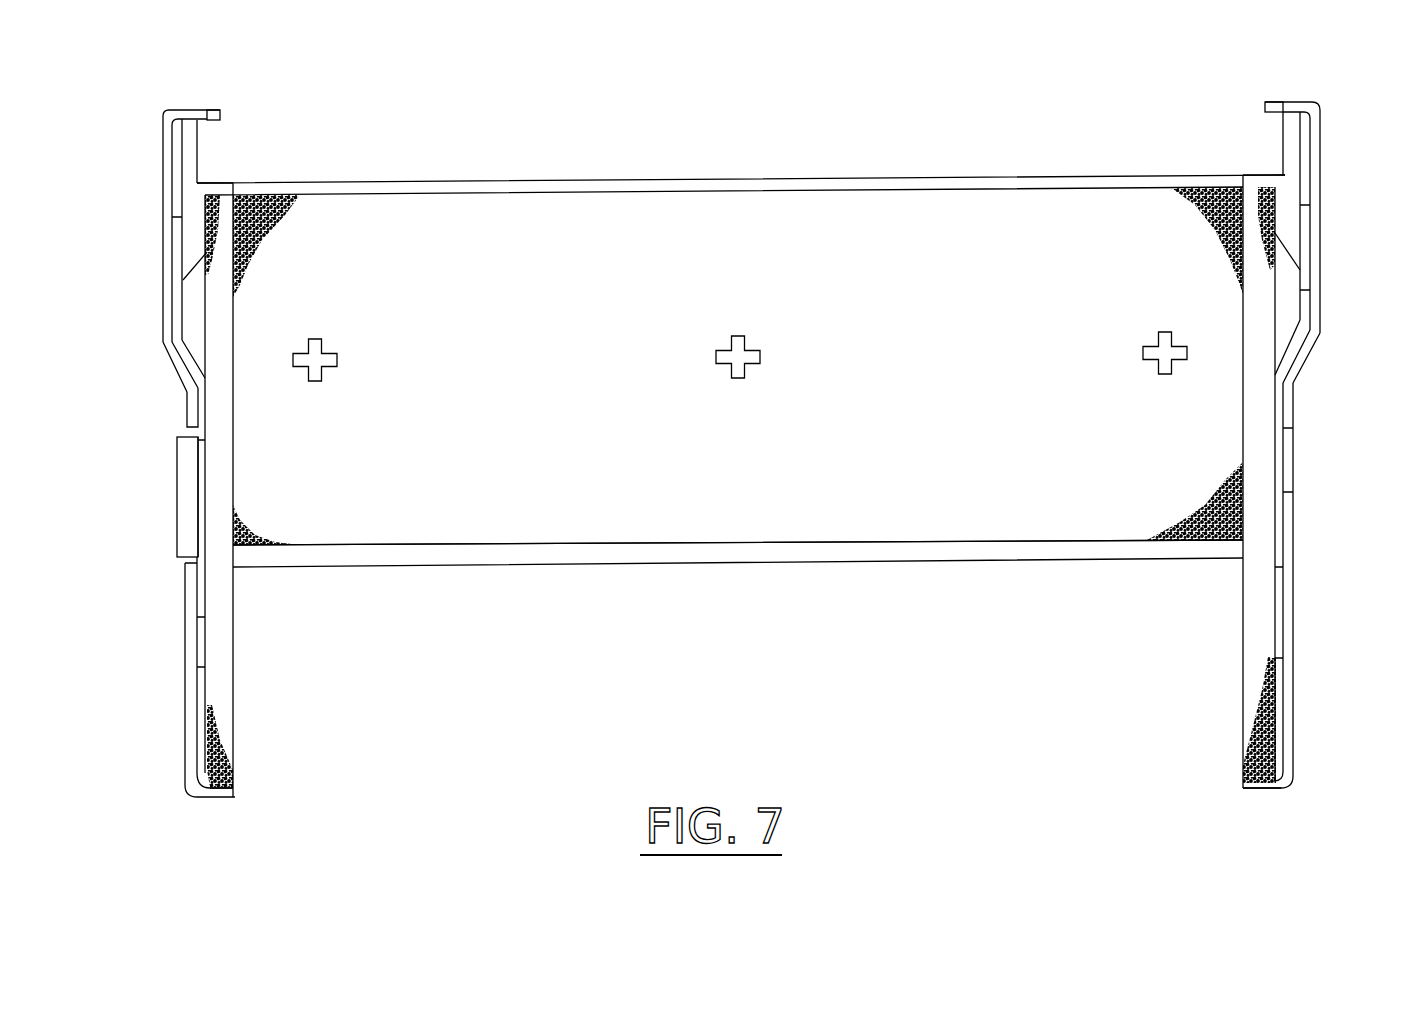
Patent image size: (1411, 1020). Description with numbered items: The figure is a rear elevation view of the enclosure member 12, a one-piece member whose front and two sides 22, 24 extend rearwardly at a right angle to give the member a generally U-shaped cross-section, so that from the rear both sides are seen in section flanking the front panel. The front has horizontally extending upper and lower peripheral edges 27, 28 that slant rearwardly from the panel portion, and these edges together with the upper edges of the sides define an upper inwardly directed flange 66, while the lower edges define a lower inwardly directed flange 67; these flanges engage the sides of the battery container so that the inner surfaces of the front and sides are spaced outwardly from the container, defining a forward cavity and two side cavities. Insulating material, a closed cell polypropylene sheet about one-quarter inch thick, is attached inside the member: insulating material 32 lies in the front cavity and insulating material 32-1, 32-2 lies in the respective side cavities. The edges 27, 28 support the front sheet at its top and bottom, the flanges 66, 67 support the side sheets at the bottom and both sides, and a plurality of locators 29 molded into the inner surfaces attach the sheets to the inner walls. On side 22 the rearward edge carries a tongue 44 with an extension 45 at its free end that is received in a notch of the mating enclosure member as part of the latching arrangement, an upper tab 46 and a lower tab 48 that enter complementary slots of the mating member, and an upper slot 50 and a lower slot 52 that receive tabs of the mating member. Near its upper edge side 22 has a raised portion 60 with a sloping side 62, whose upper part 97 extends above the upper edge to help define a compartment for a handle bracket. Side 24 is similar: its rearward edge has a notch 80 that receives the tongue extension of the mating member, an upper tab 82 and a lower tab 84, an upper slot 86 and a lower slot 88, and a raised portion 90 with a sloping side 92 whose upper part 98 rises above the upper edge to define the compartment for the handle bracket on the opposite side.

The enclosure member 12 is at (765, 715).
The side 22 is at (162, 287).
The side 24 is at (1320, 303).
The upper peripheral edge 27 is at (867, 178).
The lower peripheral edge 28 is at (598, 556).
The locators 29 is at (318, 381).
The insulating material 32 is at (877, 527).
The insulating material 32-1 is at (220, 653).
The insulating material 32-2 is at (1255, 568).
The tongue 44 is at (177, 485).
The extension 45 is at (198, 515).
The upper tab 46 is at (173, 322).
The lower tab 48 is at (202, 738).
The upper slot 50 is at (175, 196).
The lower slot 52 is at (200, 618).
The raised portion 60 is at (162, 186).
The sloping side 62 is at (175, 377).
The upper inwardly directed flange 66 is at (270, 182).
The lower inwardly directed flange 67 is at (237, 792).
The notch 80 is at (1288, 455).
The upper tab 82 is at (1305, 140).
The lower tab 84 is at (1278, 607).
The upper slot 86 is at (1305, 250).
The lower slot 88 is at (1277, 713).
The raised portion 90 is at (1320, 177).
The sloping side 92 is at (1310, 358).
The upper part 97 is at (178, 105).
The upper part 98 is at (1302, 102).